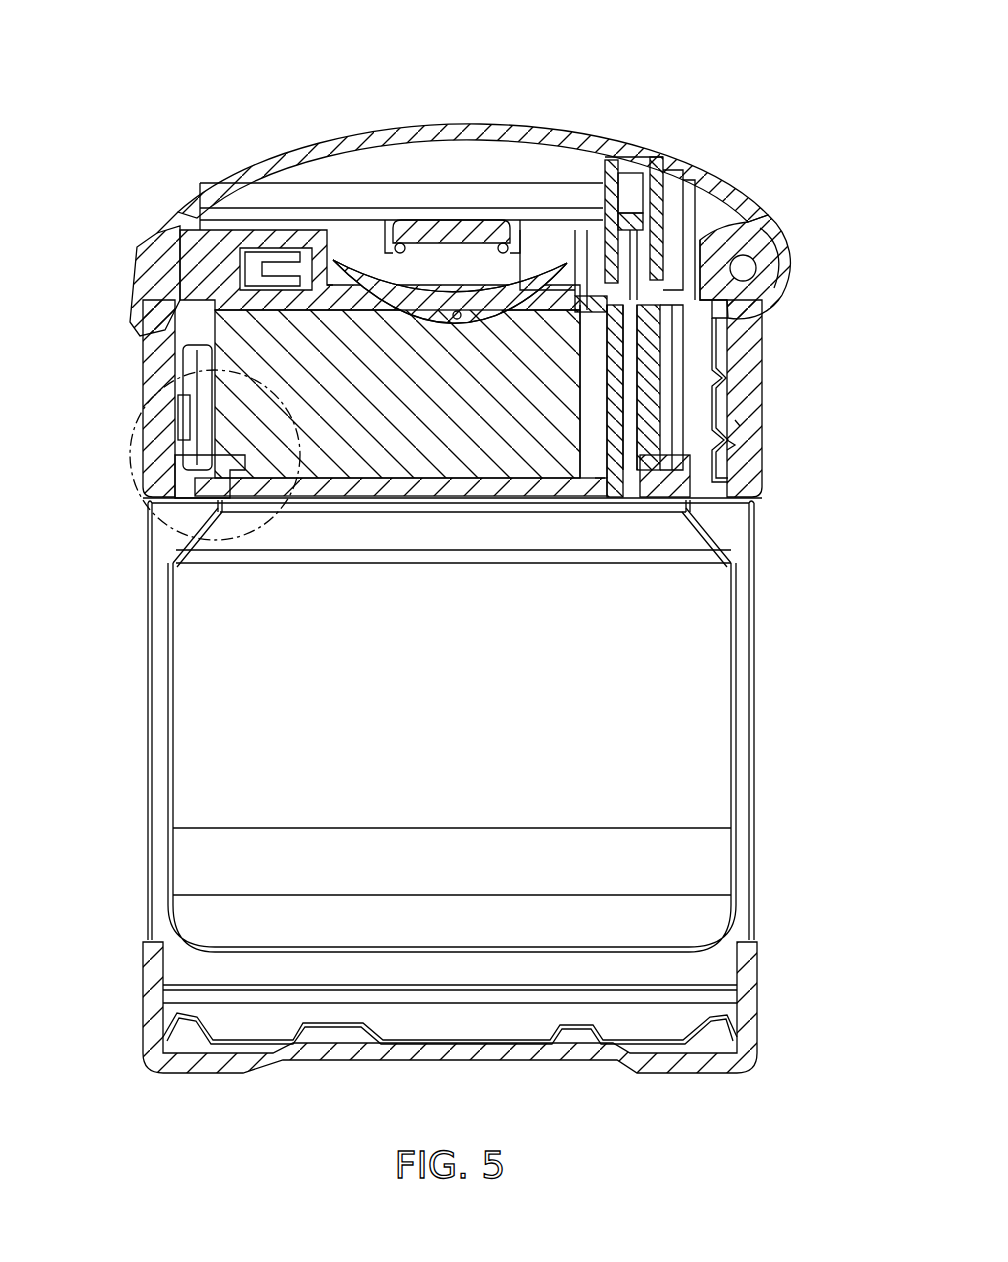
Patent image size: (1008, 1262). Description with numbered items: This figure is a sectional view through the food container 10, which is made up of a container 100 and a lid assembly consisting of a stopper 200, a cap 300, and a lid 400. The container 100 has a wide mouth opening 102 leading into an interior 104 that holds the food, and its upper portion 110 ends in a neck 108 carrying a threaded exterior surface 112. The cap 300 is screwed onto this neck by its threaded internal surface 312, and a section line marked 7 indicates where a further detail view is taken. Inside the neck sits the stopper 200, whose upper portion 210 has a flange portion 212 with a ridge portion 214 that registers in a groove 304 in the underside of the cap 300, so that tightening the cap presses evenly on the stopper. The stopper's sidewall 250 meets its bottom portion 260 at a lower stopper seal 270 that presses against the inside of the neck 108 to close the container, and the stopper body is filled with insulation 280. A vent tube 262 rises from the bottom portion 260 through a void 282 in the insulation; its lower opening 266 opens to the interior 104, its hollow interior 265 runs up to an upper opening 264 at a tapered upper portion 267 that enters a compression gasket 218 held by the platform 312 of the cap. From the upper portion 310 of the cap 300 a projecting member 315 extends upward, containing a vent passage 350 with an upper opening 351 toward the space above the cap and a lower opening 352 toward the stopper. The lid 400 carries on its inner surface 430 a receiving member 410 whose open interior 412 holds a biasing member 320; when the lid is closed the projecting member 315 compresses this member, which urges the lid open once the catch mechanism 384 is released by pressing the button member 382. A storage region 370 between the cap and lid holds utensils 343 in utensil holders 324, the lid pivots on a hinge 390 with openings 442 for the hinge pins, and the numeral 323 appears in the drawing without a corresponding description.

The food container 10 is at (797, 506).
The container 100 is at (757, 740).
The opening 102 is at (705, 372).
The interior 104 is at (717, 329).
The neck 108 is at (683, 490).
The upper portion 110 is at (182, 432).
The threaded exterior surface 112 is at (735, 452).
The stopper 200 is at (196, 455).
The upper portion 210 is at (196, 318).
The flange portion 212 is at (745, 322).
The ridge portion 214 is at (772, 222).
The compression gasket 218 is at (605, 320).
The sidewall 250 is at (210, 408).
The bottom portion 260 is at (350, 487).
The vent tube 262 is at (643, 428).
The upper opening 264 is at (617, 333).
The hollow interior 265 is at (600, 420).
The lower opening 266 is at (627, 490).
The upper portion 267 is at (632, 393).
The lower stopper seal 270 is at (215, 490).
The insulation 280 is at (413, 392).
The void 282 is at (598, 462).
The cap 300 is at (735, 400).
The groove 304 is at (722, 310).
The upper portion 310 is at (548, 252).
The threaded internal surface 312 is at (512, 318).
The projecting member 315 is at (630, 283).
The biasing member 320 is at (592, 300).
The pivot 323 is at (447, 310).
The utensil holders 324 is at (533, 297).
The utensils 343 is at (403, 272).
The vent passage 350 is at (560, 300).
The upper opening 351 is at (655, 300).
The lower opening 352 is at (700, 300).
The storage region 370 is at (260, 185).
The button member 382 is at (160, 275).
The catch mechanism 384 is at (198, 262).
The hinge 390 is at (775, 224).
The lid 400 is at (320, 150).
The receiving member 410 is at (672, 260).
The open interior 412 is at (628, 187).
The inner surface 430 is at (398, 220).
The openings 442 is at (743, 268).
The section line 7 is at (287, 523).